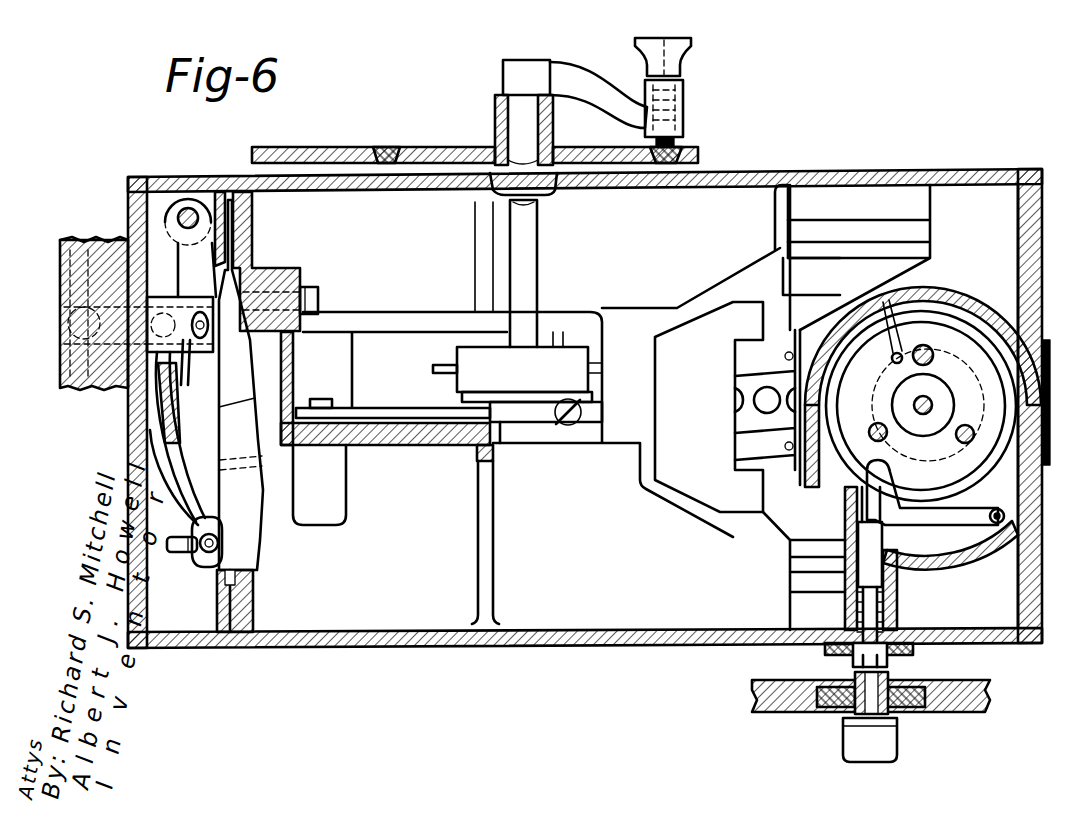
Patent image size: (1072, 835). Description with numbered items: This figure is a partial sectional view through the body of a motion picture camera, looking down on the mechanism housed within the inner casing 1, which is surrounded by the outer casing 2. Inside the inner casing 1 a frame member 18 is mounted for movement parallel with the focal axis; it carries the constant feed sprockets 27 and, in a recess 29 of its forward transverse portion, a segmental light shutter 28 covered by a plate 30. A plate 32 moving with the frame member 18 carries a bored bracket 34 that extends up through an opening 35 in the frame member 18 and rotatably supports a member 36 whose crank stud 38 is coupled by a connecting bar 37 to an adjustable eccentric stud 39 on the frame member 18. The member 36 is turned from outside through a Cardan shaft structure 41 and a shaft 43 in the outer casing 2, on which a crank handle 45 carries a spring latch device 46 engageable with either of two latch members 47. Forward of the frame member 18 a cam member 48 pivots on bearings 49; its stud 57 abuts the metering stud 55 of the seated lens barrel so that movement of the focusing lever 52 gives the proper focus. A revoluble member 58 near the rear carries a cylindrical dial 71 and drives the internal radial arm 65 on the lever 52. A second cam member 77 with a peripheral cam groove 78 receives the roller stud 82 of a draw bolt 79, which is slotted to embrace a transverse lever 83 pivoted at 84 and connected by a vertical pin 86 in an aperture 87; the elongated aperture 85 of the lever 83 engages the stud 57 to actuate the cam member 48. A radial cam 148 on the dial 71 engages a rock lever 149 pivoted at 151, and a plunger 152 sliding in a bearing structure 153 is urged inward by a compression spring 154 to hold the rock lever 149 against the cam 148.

The inner casing 1 is at (888, 172).
The outer casing 2 is at (432, 148).
The frame member 18 is at (362, 632).
The constant feed sprockets 27 is at (248, 224).
The segmental light shutter 28 is at (252, 573).
The recess 29 is at (252, 592).
The plate 30 is at (217, 613).
The plate 32 is at (405, 340).
The bored bracket 34 is at (588, 380).
The opening 35 is at (535, 422).
The member 36 is at (590, 404).
The connecting bar 37 is at (412, 410).
The crank stud 38 is at (478, 448).
The adjustable eccentric stud 39 is at (322, 399).
The Cardan shaft structure 41 is at (537, 280).
The shaft 43 is at (517, 118).
The crank handle 45 is at (578, 86).
The spring latch device 46 is at (683, 110).
The latch members 47 is at (385, 148).
The cam member 48 is at (175, 488).
The bearings 49 is at (163, 312).
The lever 52 is at (246, 455).
The metering stud 55 is at (180, 548).
The stud 57 is at (220, 540).
The revoluble member 58 is at (957, 395).
The internal radial arm 65 is at (760, 385).
The cylindrical dial 71 is at (866, 345).
The cam member 77 is at (106, 240).
The cam groove 78 is at (83, 238).
The draw bolt 79 is at (75, 302).
The roller stud 82 is at (85, 332).
The lever 83 is at (218, 402).
The pivot 84 is at (187, 210).
The elongated aperture 85 is at (215, 530).
The vertical pin 86 is at (205, 328).
The aperture 87 is at (186, 345).
The radial cam 148 is at (950, 320).
The rock lever 149 is at (965, 518).
The pivot 151 is at (1000, 525).
The plunger 152 is at (880, 600).
The bearing structure 153 is at (915, 657).
The compression spring 154 is at (897, 612).